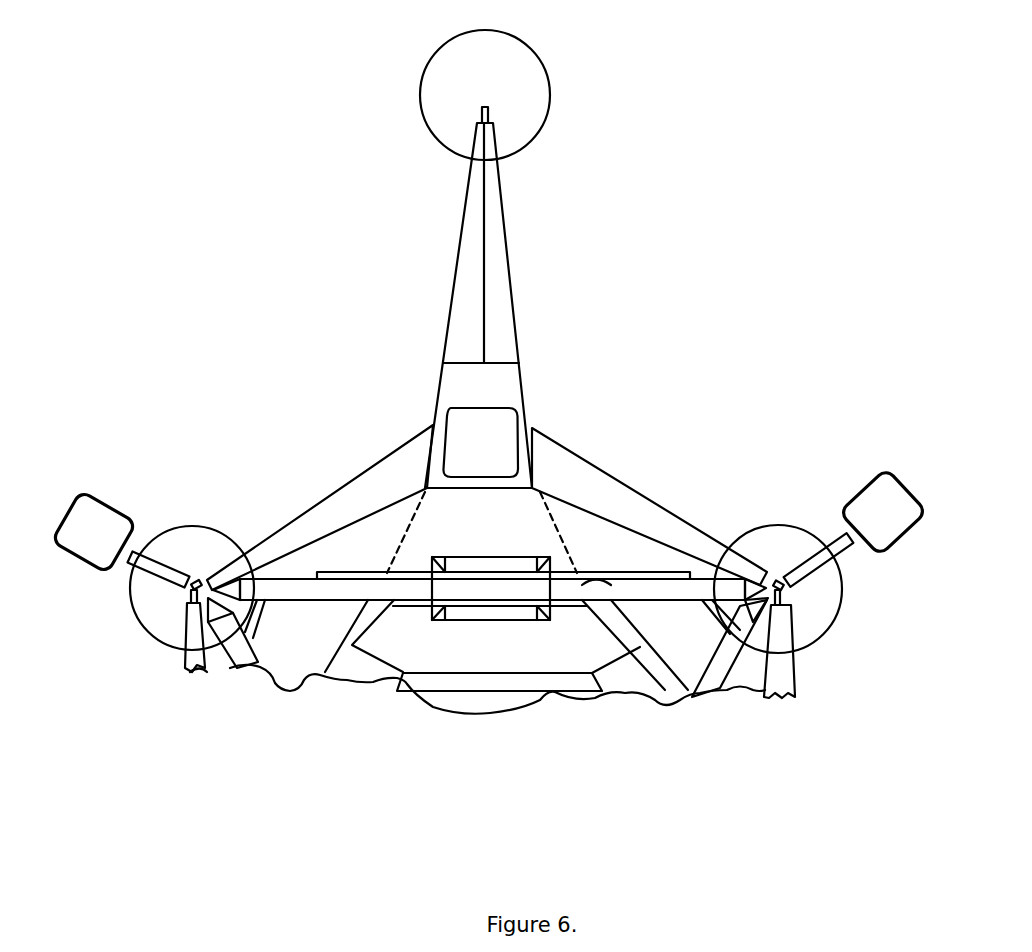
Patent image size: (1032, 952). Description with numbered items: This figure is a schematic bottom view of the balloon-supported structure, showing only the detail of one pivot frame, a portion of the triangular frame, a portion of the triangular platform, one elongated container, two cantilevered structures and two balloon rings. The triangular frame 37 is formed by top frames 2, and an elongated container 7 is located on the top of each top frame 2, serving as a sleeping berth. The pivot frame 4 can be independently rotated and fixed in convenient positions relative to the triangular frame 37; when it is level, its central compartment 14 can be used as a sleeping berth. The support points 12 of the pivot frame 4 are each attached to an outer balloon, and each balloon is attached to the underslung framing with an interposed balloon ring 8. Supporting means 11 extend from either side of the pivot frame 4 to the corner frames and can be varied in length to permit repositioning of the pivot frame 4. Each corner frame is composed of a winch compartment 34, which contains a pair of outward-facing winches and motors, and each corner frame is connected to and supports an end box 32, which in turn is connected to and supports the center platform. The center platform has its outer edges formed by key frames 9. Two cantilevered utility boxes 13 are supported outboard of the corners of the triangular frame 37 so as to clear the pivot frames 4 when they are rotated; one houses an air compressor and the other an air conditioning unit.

The top frame 2 is at (287, 545).
The pivot frame 4 is at (430, 348).
The elongated container 7 is at (437, 622).
The balloon ring 8 is at (552, 81).
The key frame 9 is at (502, 672).
The supporting means 11 is at (394, 536).
The support point 12 is at (480, 106).
The cantilevered utility box 13 is at (98, 498).
The central compartment 14 is at (518, 450).
The end box 32 is at (372, 690).
The winch compartment 34 is at (300, 690).
The triangular frame 37 is at (614, 405).